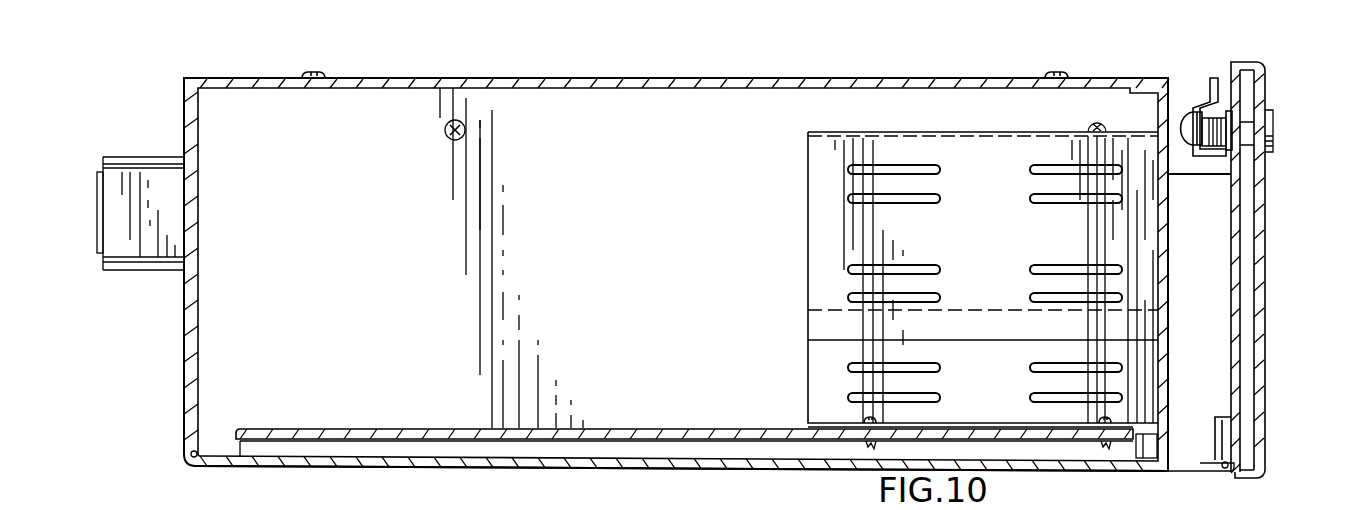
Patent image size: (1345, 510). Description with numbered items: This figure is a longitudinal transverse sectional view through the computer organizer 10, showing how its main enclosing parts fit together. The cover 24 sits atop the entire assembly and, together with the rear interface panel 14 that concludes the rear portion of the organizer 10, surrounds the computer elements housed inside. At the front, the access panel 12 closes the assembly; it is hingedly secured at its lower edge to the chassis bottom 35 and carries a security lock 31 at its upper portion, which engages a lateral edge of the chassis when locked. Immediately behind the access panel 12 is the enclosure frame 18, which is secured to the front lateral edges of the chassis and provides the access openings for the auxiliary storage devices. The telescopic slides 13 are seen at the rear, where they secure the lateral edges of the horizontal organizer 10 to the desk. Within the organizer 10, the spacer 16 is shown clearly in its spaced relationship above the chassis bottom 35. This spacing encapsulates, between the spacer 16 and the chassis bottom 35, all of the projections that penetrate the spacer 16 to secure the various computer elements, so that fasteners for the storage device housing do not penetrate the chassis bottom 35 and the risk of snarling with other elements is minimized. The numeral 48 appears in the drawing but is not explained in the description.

The organizer 10 is at (1167, 58).
The access panel 12 is at (1268, 250).
The telescopic slides 13 is at (142, 155).
The rear interface panel 14 is at (200, 268).
The spacer 16 is at (684, 430).
The enclosure frame 18 is at (1158, 240).
The cover 24 is at (622, 78).
The security lock 31 is at (1278, 145).
The chassis bottom 35 is at (497, 457).
The mounting flange 48 is at (208, 509).